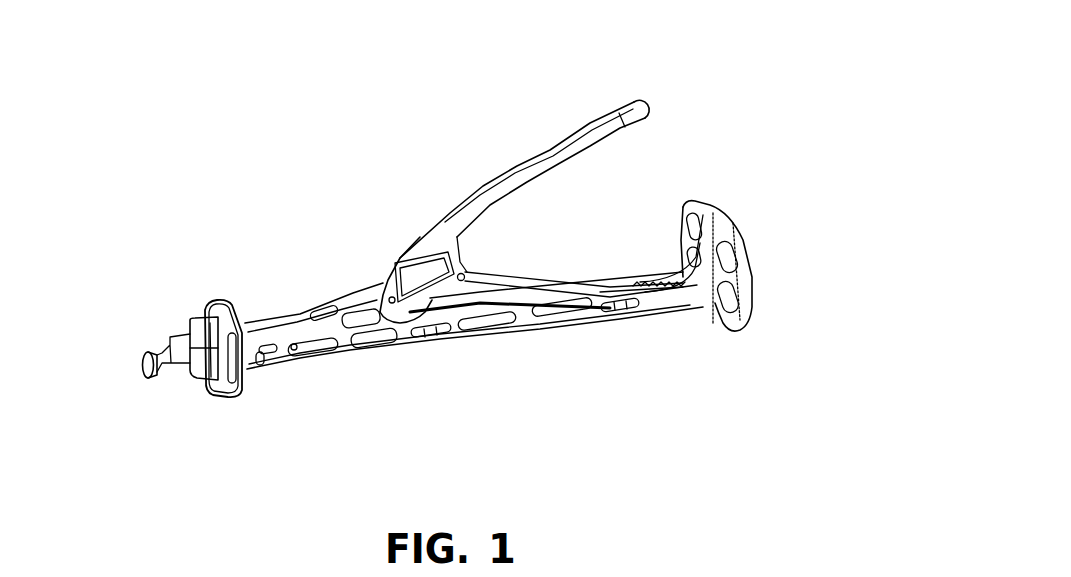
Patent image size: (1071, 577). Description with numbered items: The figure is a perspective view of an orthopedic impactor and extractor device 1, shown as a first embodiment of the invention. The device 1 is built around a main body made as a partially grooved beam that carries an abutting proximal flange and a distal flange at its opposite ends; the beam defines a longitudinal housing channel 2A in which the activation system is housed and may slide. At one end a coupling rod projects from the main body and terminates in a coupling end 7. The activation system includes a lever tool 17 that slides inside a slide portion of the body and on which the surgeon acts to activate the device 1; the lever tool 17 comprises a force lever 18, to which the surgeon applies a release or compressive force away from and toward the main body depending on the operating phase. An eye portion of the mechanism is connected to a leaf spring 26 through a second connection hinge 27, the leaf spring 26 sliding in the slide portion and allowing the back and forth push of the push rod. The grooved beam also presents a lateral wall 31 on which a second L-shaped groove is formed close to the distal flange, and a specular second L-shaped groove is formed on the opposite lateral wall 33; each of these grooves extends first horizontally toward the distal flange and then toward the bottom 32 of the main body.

The orthopedic impactor and extractor device 1 is at (214, 72).
The coupling end 7 is at (157, 352).
The lever tool 17 is at (441, 208).
The force lever 18 is at (597, 133).
The leaf spring 26 is at (490, 283).
The second connection hinge 27 is at (460, 281).
The longitudinal housing channel 2A is at (590, 290).
The lateral wall 31 is at (283, 355).
The bottom 32 is at (552, 328).
The opposite lateral wall 33 is at (266, 324).